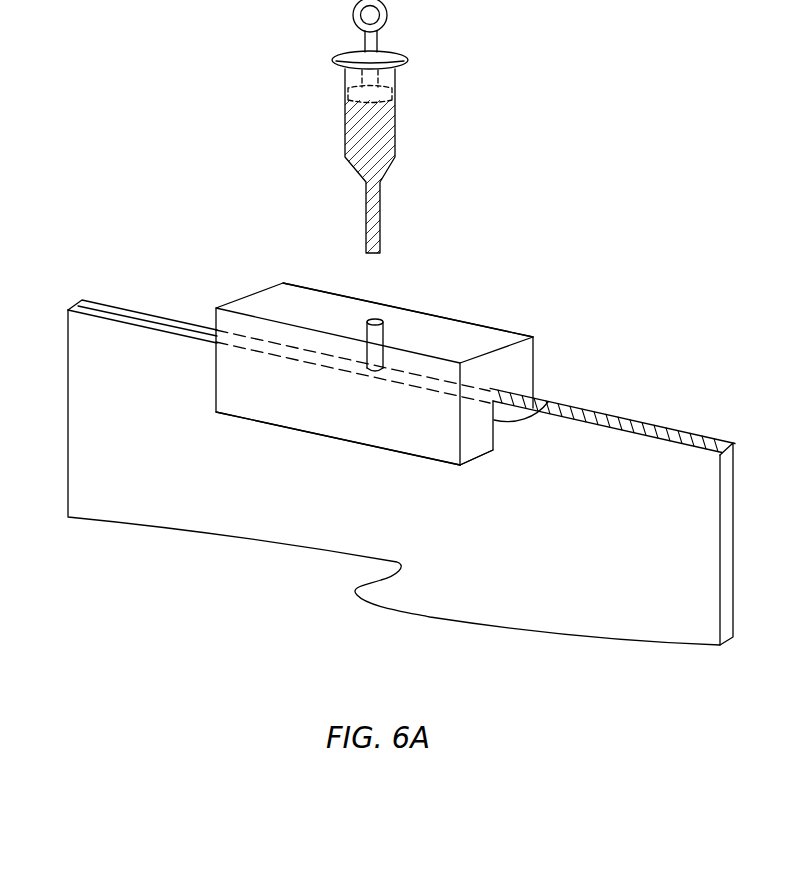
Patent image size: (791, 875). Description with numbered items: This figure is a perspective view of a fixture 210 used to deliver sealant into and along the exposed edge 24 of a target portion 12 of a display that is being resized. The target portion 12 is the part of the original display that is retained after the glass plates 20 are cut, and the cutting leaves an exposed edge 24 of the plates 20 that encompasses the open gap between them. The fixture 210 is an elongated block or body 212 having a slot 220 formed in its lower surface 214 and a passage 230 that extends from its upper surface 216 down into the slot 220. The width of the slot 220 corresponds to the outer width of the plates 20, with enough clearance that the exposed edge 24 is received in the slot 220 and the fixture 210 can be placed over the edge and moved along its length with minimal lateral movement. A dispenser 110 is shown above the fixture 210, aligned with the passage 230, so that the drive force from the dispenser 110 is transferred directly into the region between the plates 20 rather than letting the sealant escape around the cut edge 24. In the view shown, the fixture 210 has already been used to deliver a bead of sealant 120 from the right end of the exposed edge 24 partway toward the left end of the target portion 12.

The target portion 12 is at (212, 580).
The plates 20 is at (78, 407).
The exposed edge 24 is at (143, 313).
The dispenser 110 is at (300, 75).
The sealant 120 is at (628, 419).
The fixture 210 is at (528, 292).
The body 212 is at (327, 437).
The lower surface 214 is at (480, 459).
The upper surface 216 is at (310, 297).
The slot 220 is at (548, 402).
The passage 230 is at (378, 319).